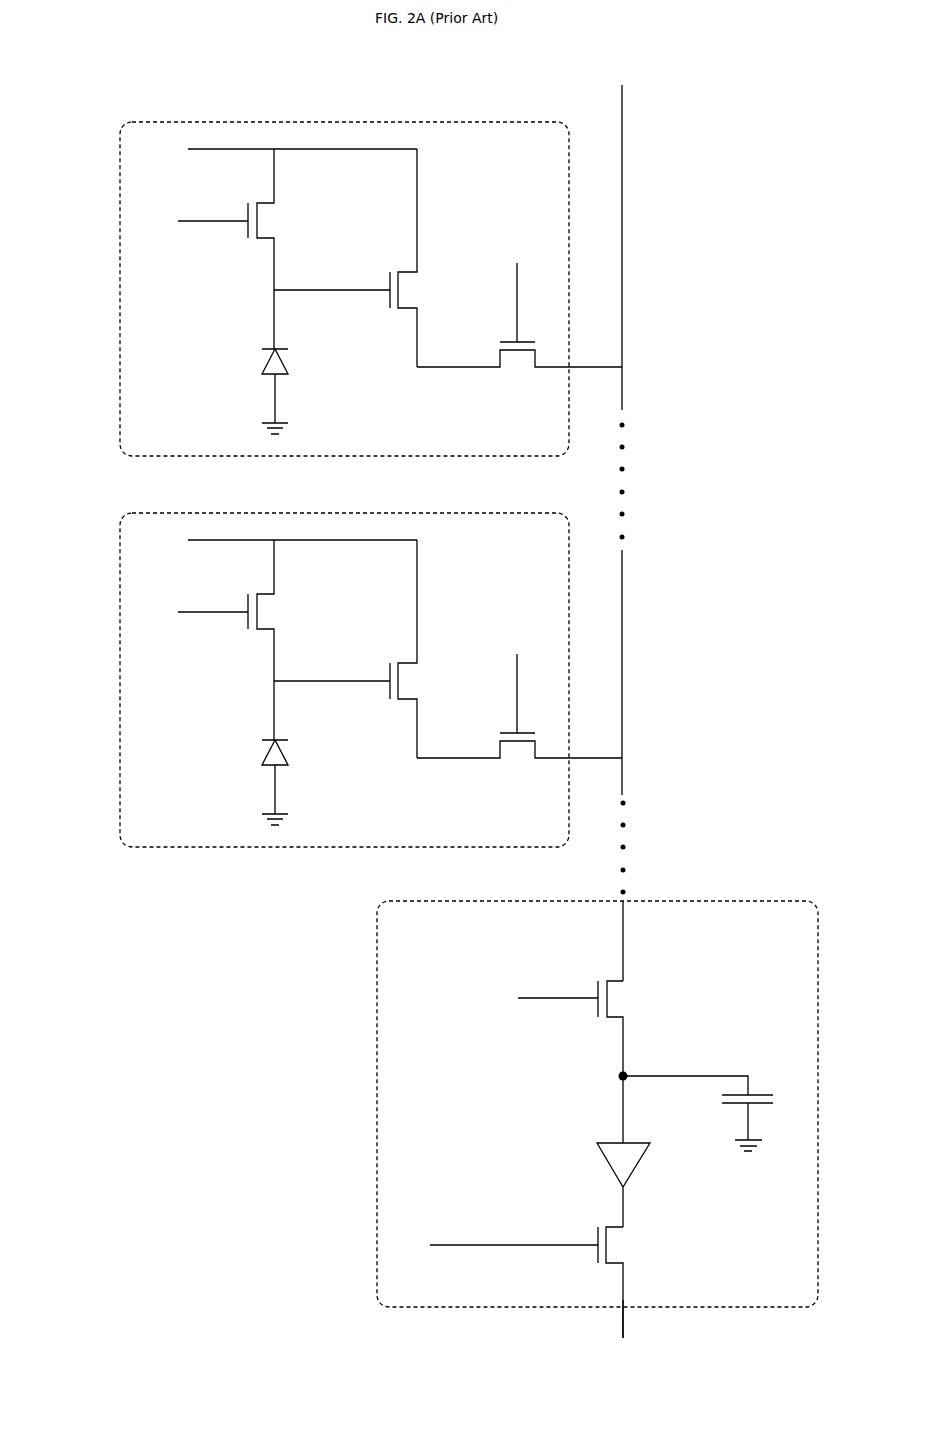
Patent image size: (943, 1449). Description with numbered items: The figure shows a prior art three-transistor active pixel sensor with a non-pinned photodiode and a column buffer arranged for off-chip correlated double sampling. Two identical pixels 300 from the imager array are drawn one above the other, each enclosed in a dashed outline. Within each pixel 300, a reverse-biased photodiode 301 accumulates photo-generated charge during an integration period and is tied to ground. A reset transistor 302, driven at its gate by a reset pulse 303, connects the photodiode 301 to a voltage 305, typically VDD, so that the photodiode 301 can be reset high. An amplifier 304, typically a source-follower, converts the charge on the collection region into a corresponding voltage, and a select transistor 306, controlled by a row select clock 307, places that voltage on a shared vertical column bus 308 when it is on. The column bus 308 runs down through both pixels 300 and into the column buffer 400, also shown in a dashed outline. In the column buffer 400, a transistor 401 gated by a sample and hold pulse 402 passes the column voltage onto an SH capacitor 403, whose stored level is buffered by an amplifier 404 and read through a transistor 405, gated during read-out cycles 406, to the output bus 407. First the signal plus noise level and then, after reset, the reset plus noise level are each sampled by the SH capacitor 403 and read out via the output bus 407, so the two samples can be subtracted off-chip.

The pixel 300 is at (345, 122).
The photodiode 301 is at (259, 587).
The reset transistor 302 is at (267, 444).
The reset pulse 303 is at (195, 416).
The amplifier 304 is at (353, 453).
The voltage 305 is at (287, 344).
The select transistor 306 is at (519, 559).
The row select clock 307 is at (517, 487).
The column bus 308 is at (632, 523).
The column buffer 400 is at (377, 1103).
The sample transistor 401 is at (620, 1062).
The sample and hold pulse 402 is at (542, 998).
The SH capacitor 403 is at (714, 1112).
The amplifier 404 is at (613, 1185).
The output transistor 405 is at (618, 1282).
The read-out cycles 406 is at (496, 1245).
The output bus 407 is at (640, 1323).